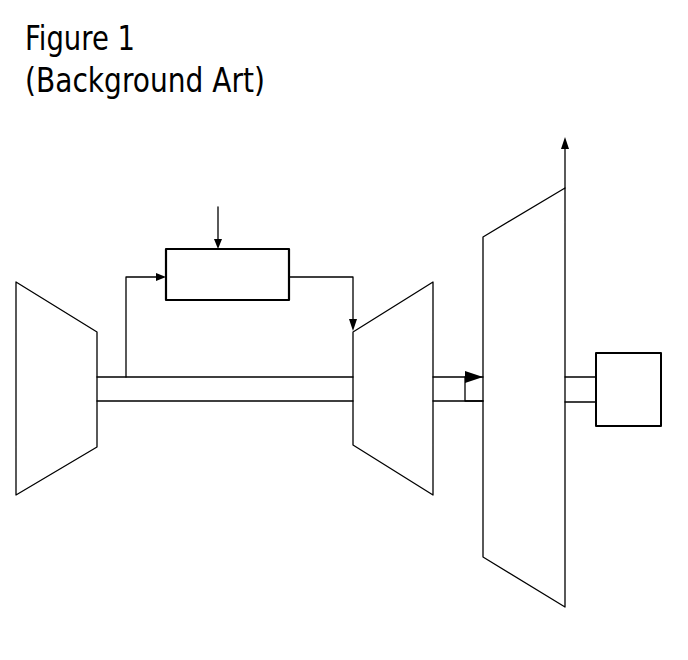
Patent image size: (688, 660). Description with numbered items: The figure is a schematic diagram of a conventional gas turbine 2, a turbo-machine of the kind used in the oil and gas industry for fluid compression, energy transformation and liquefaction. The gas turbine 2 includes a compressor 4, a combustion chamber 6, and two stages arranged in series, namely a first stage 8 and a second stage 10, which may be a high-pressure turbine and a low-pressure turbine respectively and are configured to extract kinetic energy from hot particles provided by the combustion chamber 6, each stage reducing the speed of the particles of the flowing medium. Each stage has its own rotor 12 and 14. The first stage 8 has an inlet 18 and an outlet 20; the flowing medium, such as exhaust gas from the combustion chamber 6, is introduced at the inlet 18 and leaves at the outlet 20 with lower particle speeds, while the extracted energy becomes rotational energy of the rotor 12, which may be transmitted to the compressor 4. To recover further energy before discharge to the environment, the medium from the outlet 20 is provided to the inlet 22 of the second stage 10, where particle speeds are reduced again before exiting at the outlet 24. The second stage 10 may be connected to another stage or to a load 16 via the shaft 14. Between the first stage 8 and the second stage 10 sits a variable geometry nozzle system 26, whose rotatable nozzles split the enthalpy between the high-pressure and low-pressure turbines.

The gas turbine 2 is at (318, 166).
The compressor 4 is at (47, 452).
The combustion chamber 6 is at (254, 249).
The first stage 8 is at (395, 473).
The second stage 10 is at (525, 585).
The rotor 12 is at (313, 402).
The rotor 14 is at (574, 375).
The load 16 is at (623, 353).
The inlet 18 is at (355, 292).
The outlet 20 is at (437, 375).
The inlet 22 is at (467, 372).
The outlet 24 is at (560, 166).
The variable geometry nozzle system 26 is at (472, 399).